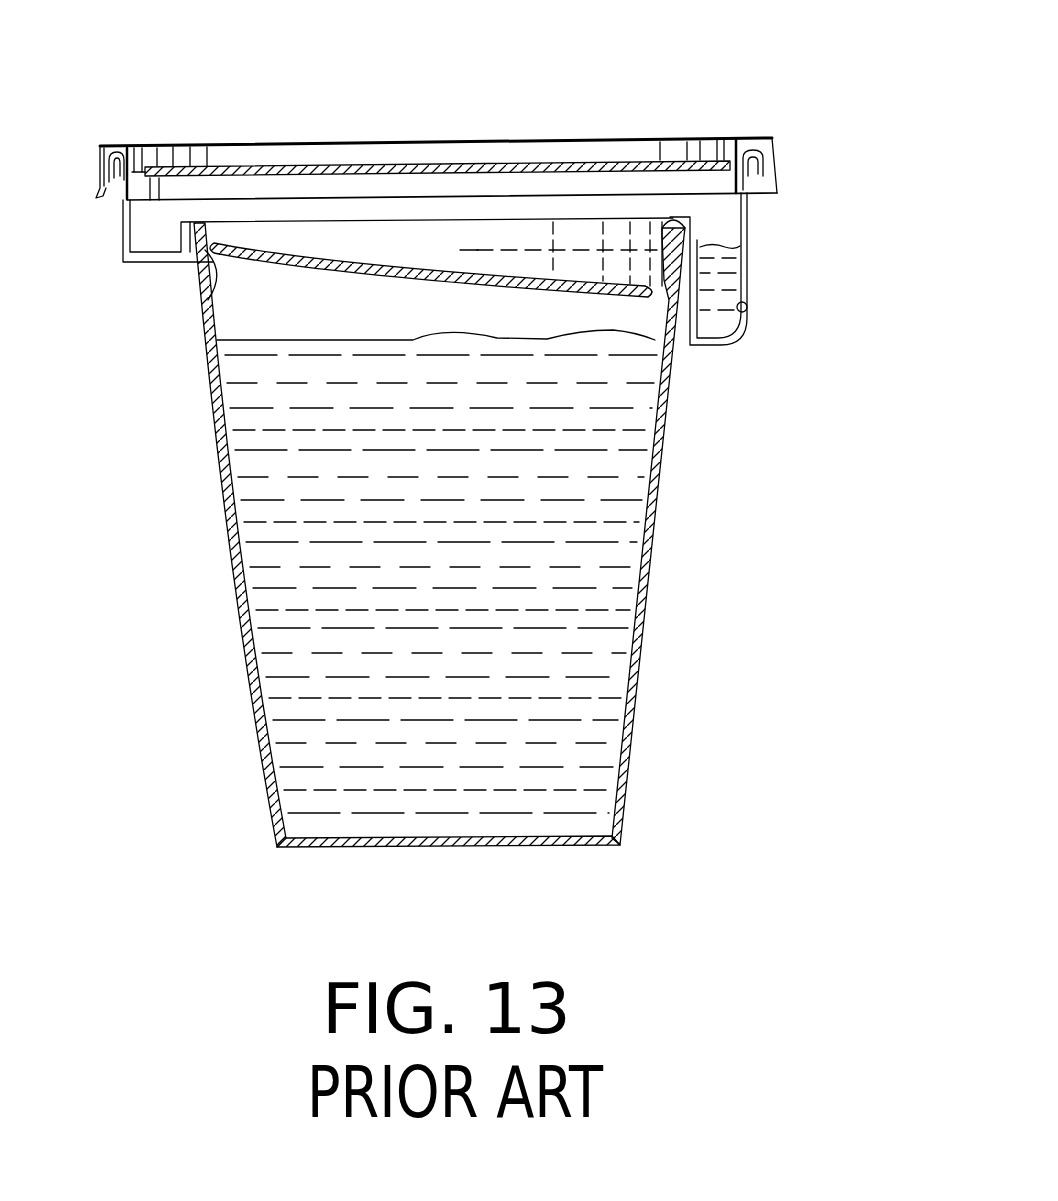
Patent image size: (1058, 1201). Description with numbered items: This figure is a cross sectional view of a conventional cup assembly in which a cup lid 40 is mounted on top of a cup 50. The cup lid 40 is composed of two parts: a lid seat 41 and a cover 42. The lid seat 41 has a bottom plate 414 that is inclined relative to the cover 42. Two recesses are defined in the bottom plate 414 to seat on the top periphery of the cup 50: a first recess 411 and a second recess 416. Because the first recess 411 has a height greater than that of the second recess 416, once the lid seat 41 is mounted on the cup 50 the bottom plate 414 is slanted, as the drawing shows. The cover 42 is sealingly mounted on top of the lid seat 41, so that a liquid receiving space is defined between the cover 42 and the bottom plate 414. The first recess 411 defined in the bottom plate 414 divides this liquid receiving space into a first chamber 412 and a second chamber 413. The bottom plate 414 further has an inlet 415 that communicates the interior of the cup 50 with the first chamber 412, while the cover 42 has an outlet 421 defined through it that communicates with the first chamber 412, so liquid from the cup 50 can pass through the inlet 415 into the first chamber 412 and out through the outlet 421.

The cup lid 40 is at (772, 136).
The lid seat 41 is at (748, 243).
The first recess 411 is at (676, 222).
The first chamber 412 is at (336, 240).
The second chamber 413 is at (744, 306).
The bottom plate 414 is at (470, 270).
The inlet 415 is at (632, 296).
The second recess 416 is at (209, 303).
The cover 42 is at (584, 140).
The outlet 421 is at (201, 163).
The cup 50 is at (650, 609).